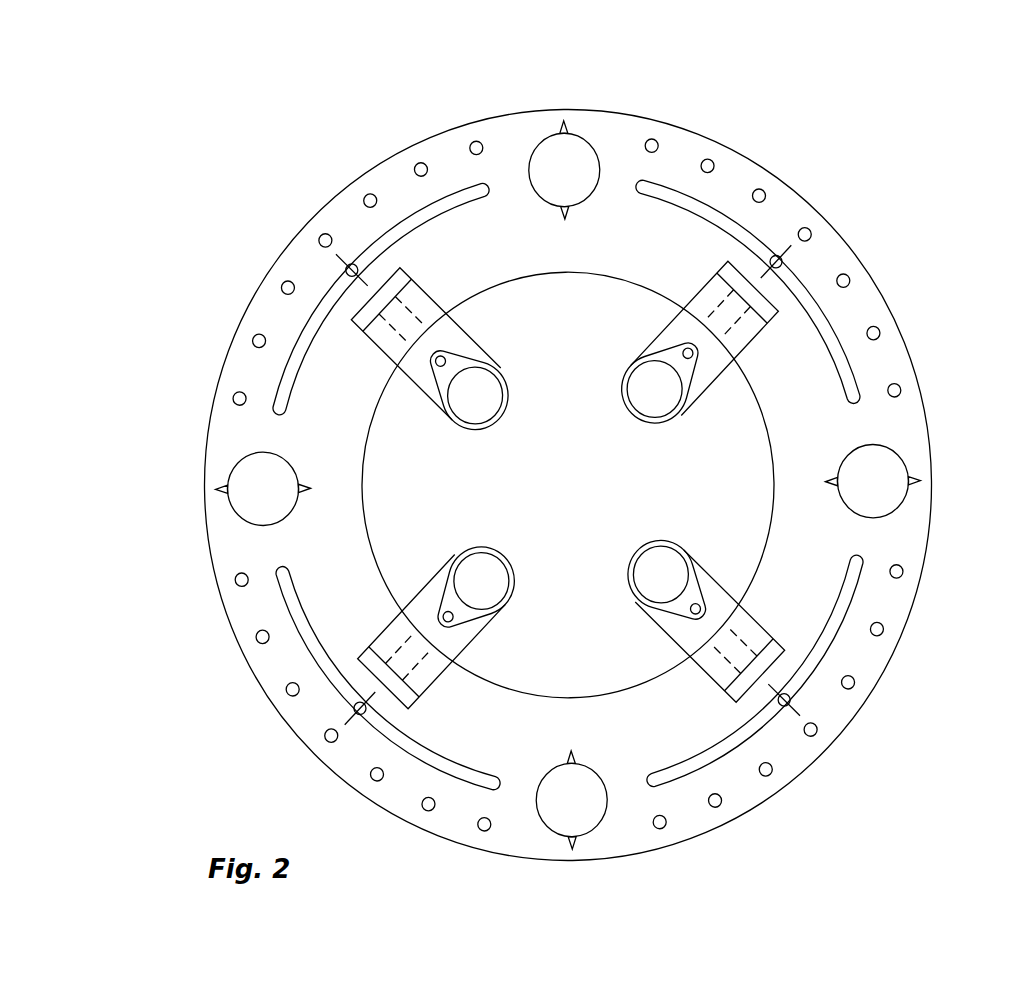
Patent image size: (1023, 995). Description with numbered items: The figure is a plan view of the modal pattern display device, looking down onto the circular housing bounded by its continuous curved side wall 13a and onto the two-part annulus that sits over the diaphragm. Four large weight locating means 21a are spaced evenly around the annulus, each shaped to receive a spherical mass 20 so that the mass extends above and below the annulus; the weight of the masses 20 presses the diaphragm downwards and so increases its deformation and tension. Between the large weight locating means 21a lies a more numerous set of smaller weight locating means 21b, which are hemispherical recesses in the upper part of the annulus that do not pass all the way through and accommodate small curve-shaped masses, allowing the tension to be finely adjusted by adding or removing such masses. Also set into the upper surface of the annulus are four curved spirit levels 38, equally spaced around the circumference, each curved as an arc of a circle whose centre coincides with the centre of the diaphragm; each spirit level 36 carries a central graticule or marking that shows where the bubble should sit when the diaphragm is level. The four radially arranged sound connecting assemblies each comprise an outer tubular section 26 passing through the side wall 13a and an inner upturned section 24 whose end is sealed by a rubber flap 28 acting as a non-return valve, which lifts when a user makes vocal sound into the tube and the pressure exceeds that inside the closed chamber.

The side wall 13a is at (692, 252).
The spherical mass 20 is at (572, 178).
The weight locating means 21a is at (569, 129).
The weight locating means 21b is at (878, 335).
The inner upturned section 24 is at (457, 393).
The outer tubular section 26 is at (433, 405).
The rubber flap 28 is at (413, 367).
The spirit level 36 is at (788, 268).
The spirit level 38 is at (783, 263).